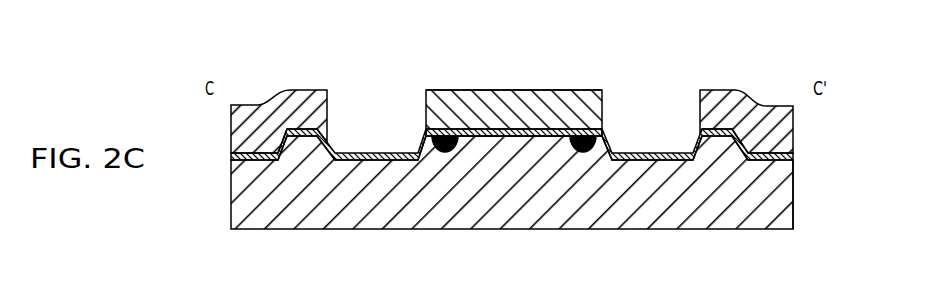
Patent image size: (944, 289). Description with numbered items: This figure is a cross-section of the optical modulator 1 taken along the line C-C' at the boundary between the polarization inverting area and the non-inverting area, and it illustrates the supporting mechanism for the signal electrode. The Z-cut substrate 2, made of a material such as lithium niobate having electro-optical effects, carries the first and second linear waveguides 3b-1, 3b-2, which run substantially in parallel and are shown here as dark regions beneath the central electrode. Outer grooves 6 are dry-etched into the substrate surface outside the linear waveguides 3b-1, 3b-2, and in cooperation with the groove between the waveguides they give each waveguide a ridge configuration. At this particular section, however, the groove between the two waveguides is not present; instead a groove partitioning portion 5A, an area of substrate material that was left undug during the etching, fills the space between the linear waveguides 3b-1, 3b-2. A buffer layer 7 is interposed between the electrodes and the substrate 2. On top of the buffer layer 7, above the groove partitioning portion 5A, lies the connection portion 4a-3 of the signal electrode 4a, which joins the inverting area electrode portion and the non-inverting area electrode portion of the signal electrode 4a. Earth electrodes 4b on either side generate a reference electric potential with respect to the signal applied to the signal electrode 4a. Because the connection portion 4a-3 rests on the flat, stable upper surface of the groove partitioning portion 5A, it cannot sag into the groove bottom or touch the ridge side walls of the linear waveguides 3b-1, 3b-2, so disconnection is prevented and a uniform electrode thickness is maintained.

The optical modulator 1 is at (800, 214).
The substrate 2 is at (791, 180).
The linear waveguide 3b-1 is at (437, 154).
The linear waveguide 3b-2 is at (582, 154).
The signal electrode 4a is at (475, 88).
The connection portion 4a-3 is at (551, 89).
The earth electrode 4b is at (293, 62).
The groove partitioning portion 5A is at (517, 161).
The outer groove 6 is at (375, 152).
The buffer layer 7 is at (611, 141).